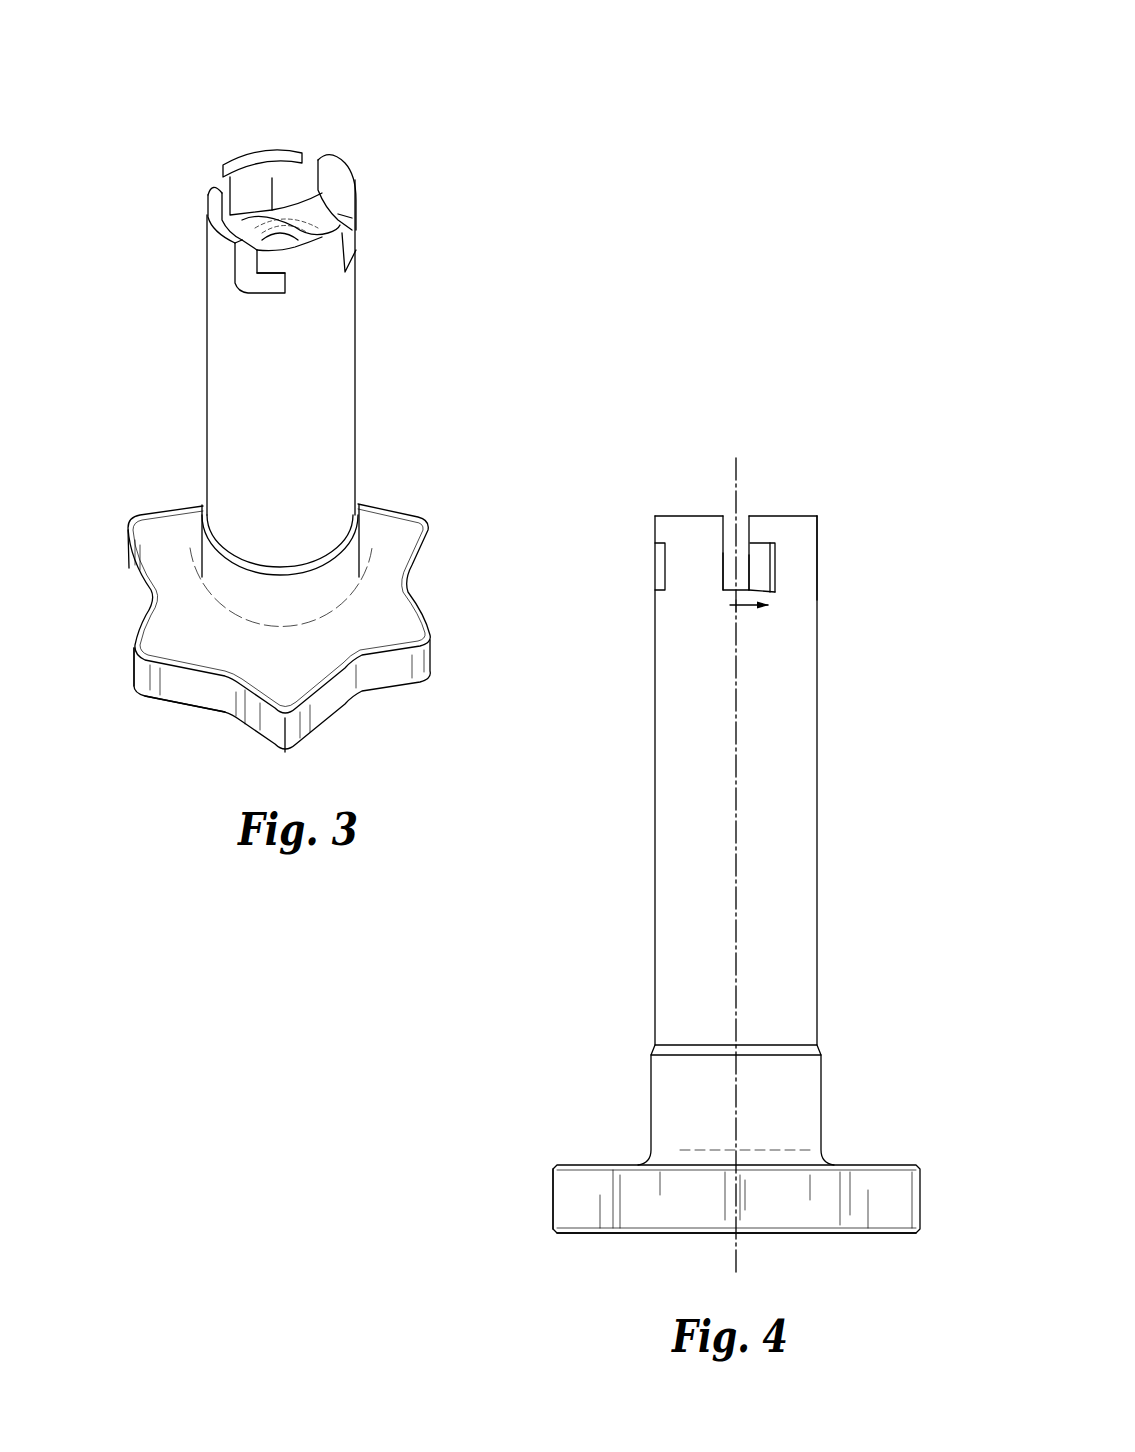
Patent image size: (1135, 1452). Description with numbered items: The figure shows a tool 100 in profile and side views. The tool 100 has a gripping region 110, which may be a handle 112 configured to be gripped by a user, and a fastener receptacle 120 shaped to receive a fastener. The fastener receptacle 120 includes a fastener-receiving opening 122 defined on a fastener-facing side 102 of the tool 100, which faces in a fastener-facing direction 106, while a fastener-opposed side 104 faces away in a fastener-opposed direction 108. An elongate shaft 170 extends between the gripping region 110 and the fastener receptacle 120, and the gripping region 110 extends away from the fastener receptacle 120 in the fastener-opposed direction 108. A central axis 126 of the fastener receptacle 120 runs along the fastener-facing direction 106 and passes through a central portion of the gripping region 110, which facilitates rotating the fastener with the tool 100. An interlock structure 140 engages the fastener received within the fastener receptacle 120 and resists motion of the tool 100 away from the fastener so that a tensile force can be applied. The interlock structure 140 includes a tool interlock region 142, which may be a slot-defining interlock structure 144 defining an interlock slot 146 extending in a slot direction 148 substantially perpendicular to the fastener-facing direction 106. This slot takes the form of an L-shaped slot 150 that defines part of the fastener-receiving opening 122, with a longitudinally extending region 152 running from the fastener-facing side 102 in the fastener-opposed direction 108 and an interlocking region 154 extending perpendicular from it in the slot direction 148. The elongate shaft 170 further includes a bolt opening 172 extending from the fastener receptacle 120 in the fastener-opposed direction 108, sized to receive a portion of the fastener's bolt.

In FIG. 3, the tool 100 is at (128, 115).
In FIG. 4, the tool 100 is at (540, 912).
In FIG. 3, the fastener-facing side 102 is at (240, 160).
In FIG. 4, the fastener-facing side 102 is at (674, 516).
In FIG. 3, the fastener-opposed side 104 is at (160, 706).
In FIG. 4, the fastener-opposed side 104 is at (568, 1240).
In FIG. 3, the fastener-facing direction 106 is at (463, 278).
In FIG. 4, the fastener-facing direction 106 is at (908, 452).
In FIG. 3, the fastener-opposed direction 108 is at (463, 315).
In FIG. 4, the fastener-opposed direction 108 is at (908, 485).
In FIG. 3, the gripping region 110 is at (132, 662).
In FIG. 4, the gripping region 110 is at (551, 1185).
In FIG. 3, the handle 112 is at (132, 678).
In FIG. 4, the handle 112 is at (553, 1218).
In FIG. 3, the fastener receptacle 120 is at (314, 158).
In FIG. 4, the fastener receptacle 120 is at (757, 555).
In FIG. 3, the fastener-receiving opening 122 is at (291, 205).
In FIG. 4, the fastener-receiving opening 122 is at (722, 507).
In FIG. 4, the central axis 126 is at (740, 1262).
In FIG. 3, the interlock structure 140 is at (205, 213).
In FIG. 4, the interlock structure 140 is at (653, 530).
In FIG. 4, the tool interlock region 142 is at (817, 525).
In FIG. 4, the slot-defining interlock structure 144 is at (803, 548).
In FIG. 4, the interlock slot 146 is at (770, 540).
In FIG. 4, the slot direction 148 is at (748, 610).
In FIG. 3, the L-shaped slot 150 is at (231, 287).
In FIG. 4, the L-shaped slot 150 is at (765, 583).
In FIG. 3, the longitudinally extending region 152 is at (245, 257).
In FIG. 4, the longitudinally extending region 152 is at (723, 553).
In FIG. 3, the interlocking region 154 is at (262, 298).
In FIG. 4, the interlocking region 154 is at (770, 570).
In FIG. 3, the elongate shaft 170 is at (205, 437).
In FIG. 4, the elongate shaft 170 is at (653, 878).
In FIG. 3, the bolt opening 172 is at (233, 243).